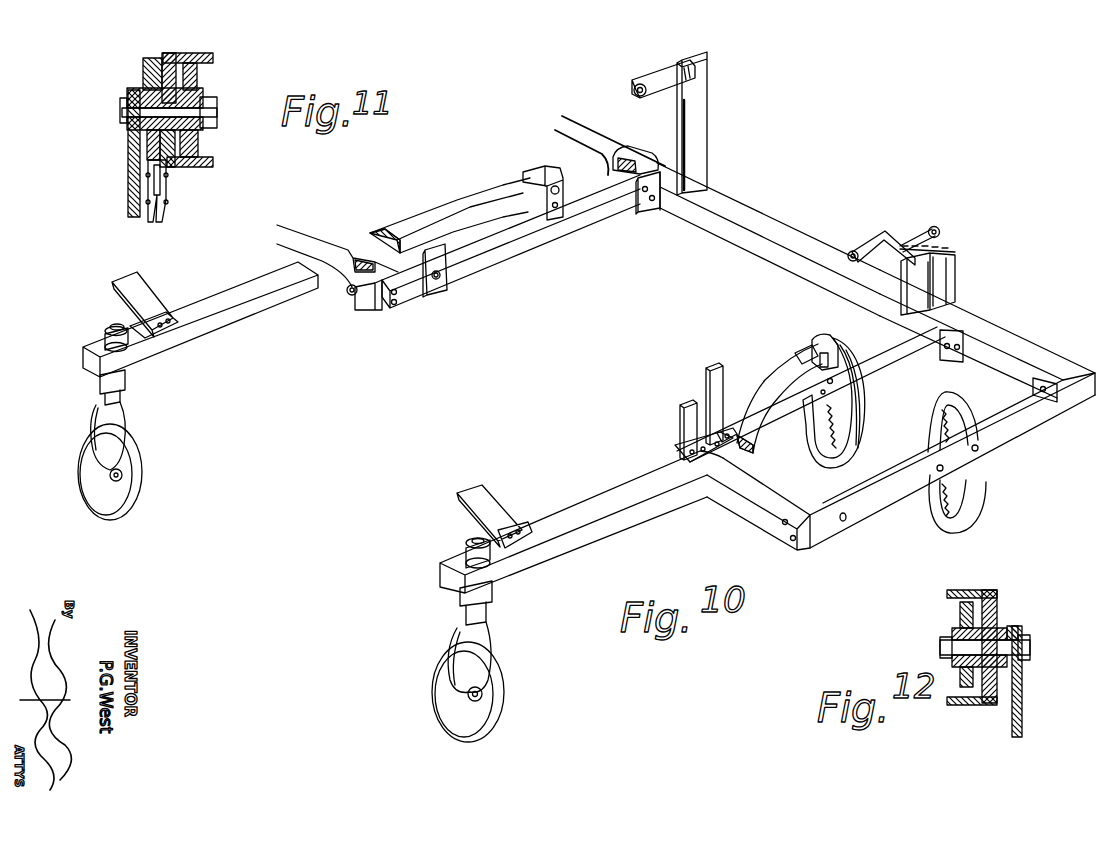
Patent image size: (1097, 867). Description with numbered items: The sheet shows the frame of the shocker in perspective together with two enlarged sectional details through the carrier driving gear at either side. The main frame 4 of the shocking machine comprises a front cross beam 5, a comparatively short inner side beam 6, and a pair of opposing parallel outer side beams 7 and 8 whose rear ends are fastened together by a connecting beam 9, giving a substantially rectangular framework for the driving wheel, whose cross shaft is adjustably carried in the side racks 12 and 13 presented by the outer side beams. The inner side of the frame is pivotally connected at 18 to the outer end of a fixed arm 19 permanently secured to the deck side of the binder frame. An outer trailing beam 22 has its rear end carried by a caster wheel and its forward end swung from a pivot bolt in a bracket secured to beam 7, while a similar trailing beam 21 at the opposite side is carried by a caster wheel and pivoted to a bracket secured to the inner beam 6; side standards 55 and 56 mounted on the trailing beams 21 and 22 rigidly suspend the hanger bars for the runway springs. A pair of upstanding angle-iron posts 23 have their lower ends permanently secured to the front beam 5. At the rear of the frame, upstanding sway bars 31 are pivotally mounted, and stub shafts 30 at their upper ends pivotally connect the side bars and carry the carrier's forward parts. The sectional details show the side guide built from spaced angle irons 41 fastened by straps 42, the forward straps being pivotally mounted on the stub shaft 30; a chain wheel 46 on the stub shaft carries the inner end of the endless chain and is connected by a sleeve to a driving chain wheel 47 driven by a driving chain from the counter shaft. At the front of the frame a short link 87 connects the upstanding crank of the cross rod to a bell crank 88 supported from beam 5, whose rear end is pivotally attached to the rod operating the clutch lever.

In FIG. 10, the main frame 4 is at (748, 238).
In FIG. 10, the front cross beam 5 is at (985, 326).
In FIG. 10, the inner side beam 6 is at (523, 250).
In FIG. 10, the outer side beam 7 is at (890, 366).
In FIG. 10, the outer side beam 8 is at (895, 500).
In FIG. 10, the connecting beam 9 is at (740, 516).
In FIG. 10, the side rack 12 is at (988, 494).
In FIG. 10, the side rack 13 is at (862, 422).
In FIG. 10, the pivotal connection 18 is at (348, 294).
In FIG. 10, the fixed arm 19 is at (322, 232).
In FIG. 10, the trailing beam 21 is at (428, 213).
In FIG. 10, the outer trailing beam 22 is at (610, 522).
In FIG. 10, the upstanding post 23 is at (945, 265).
In FIG. 11, the stub shaft 30 is at (120, 112).
In FIG. 10, the sway bar 31 is at (705, 380).
In FIG. 11, the sway bar 31 is at (128, 155).
In FIG. 11, the angle iron 41 is at (214, 58).
In FIG. 12, the angle iron 41 is at (977, 590).
In FIG. 11, the strap 42 is at (165, 55).
In FIG. 12, the strap 42 is at (997, 613).
In FIG. 11, the chain wheel 46 is at (198, 78).
In FIG. 11, the driving chain wheel 47 is at (142, 70).
In FIG. 10, the side standard 55 is at (145, 290).
In FIG. 10, the side standard 56 is at (678, 422).
In FIG. 10, the short link 87 is at (928, 226).
In FIG. 10, the bell crank 88 is at (870, 238).